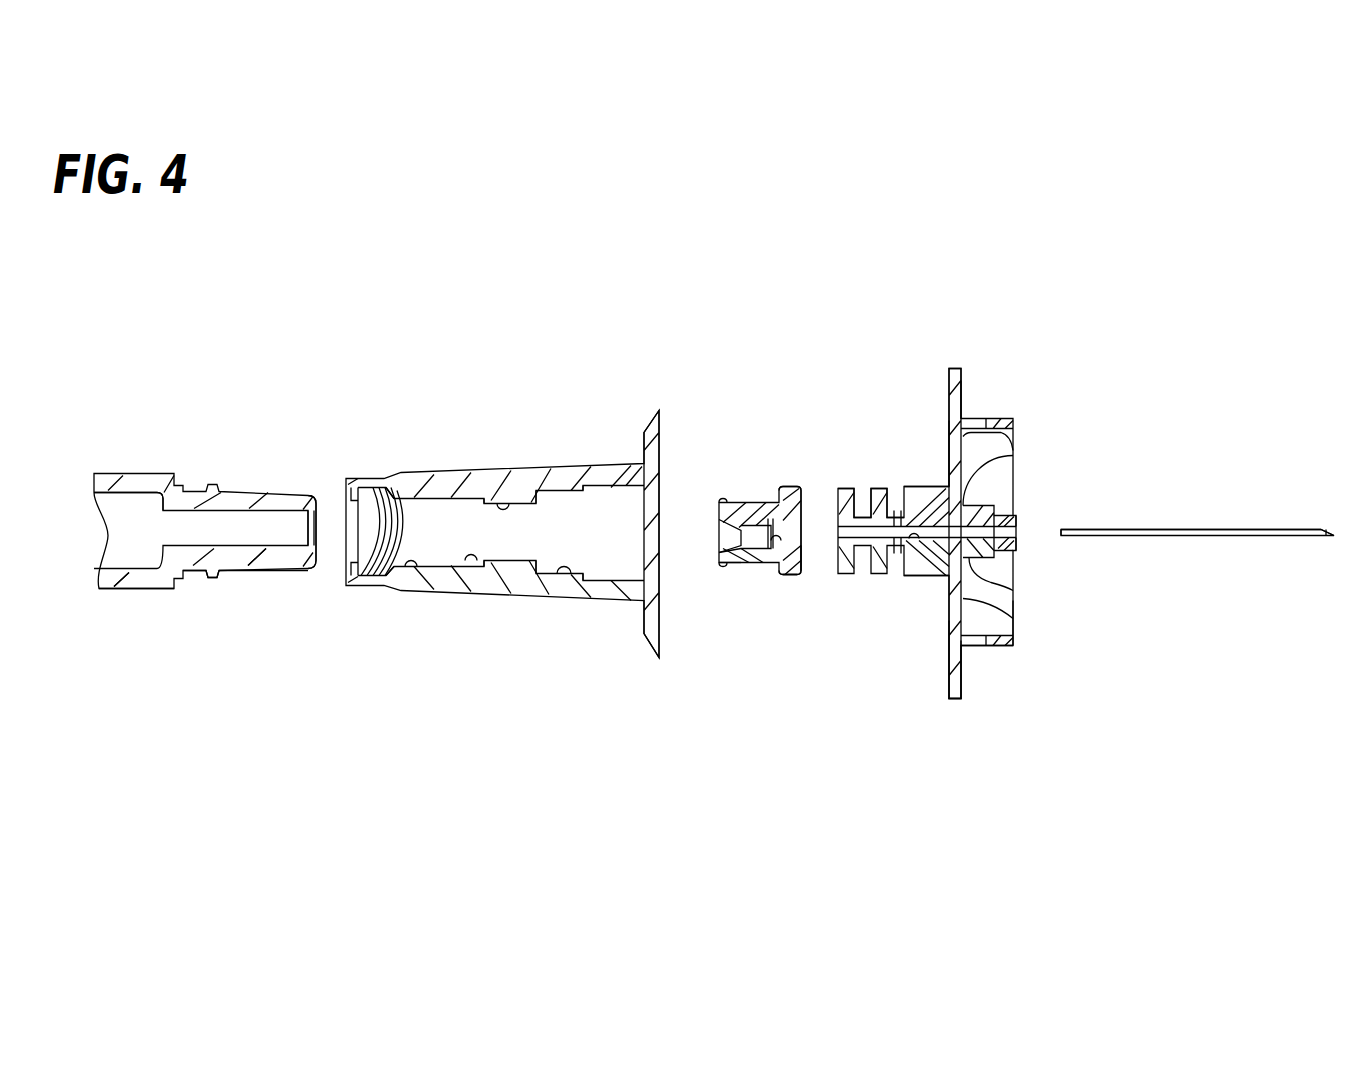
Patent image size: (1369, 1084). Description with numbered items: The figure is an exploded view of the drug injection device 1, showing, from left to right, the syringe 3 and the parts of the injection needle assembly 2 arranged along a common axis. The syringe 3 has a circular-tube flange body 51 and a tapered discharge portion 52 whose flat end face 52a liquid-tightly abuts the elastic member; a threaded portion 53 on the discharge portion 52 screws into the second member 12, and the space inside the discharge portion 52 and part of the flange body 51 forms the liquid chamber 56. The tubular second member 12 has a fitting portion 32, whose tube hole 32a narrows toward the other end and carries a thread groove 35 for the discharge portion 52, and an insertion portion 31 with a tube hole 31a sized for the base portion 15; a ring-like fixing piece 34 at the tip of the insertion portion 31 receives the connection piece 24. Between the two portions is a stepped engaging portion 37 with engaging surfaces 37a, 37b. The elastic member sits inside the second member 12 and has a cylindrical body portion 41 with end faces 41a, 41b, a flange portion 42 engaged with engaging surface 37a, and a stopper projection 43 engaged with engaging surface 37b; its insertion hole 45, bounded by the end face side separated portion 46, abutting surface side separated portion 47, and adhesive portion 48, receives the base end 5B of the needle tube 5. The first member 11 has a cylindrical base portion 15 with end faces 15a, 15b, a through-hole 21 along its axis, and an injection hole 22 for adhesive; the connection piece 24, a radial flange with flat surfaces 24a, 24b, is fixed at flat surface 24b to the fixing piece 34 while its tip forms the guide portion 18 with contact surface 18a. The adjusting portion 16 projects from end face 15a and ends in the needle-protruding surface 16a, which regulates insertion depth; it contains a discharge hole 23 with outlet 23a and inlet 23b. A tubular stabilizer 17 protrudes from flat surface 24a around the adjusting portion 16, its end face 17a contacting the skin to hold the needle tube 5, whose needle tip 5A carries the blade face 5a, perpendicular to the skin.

The drug injection device 1 is at (1153, 350).
The injection needle assembly 2 is at (1152, 797).
The syringe 3 is at (235, 437).
The needle tube 5 is at (1207, 537).
The blade face 5a is at (1326, 528).
The needle tip 5A is at (1335, 547).
The base end 5B is at (1060, 540).
The first member 11 is at (966, 722).
The second member 12 is at (468, 446).
The base portion 15 is at (912, 486).
The end face 15a is at (966, 598).
The end face 15b is at (838, 488).
The adjusting portion 16 is at (1008, 515).
The needle-protruding surface 16a is at (1020, 520).
The stabilizer 17 is at (1000, 647).
The end face 17a is at (1013, 643).
The guide portion 18 is at (950, 366).
The contact surface 18a is at (962, 393).
The through-hole 21 is at (913, 543).
The injection hole 22 is at (893, 553).
The discharge hole 23 is at (970, 503).
The outlet 23a is at (966, 556).
The inlet 23b is at (975, 542).
The connection piece 24 is at (945, 628).
The flat surface 24a is at (1013, 443).
The flat surface 24b is at (945, 445).
The insertion portion 31 is at (565, 472).
The tube hole 31a is at (563, 576).
The fitting portion 32 is at (410, 478).
The tube hole 32a is at (410, 568).
The fixing piece 34 is at (650, 410).
The thread groove 35 is at (370, 490).
The engaging portion 37 is at (503, 498).
The engaging surface 37a is at (540, 582).
The engaging surface 37b is at (470, 562).
The body portion 41 is at (745, 502).
The end face 41a is at (790, 575).
The end face 41b is at (722, 563).
The flange portion 42 is at (785, 486).
The stopper projection 43 is at (720, 498).
The insertion hole 45 is at (801, 562).
The end face side separated portion 46 is at (772, 563).
The abutting surface side separated portion 47 is at (718, 562).
The adhesive portion 48 is at (740, 563).
The flange body 51 is at (115, 598).
The discharge portion 52 is at (268, 560).
The end face 52a is at (320, 555).
The threaded portion 53 is at (212, 588).
The liquid chamber 56 is at (145, 515).